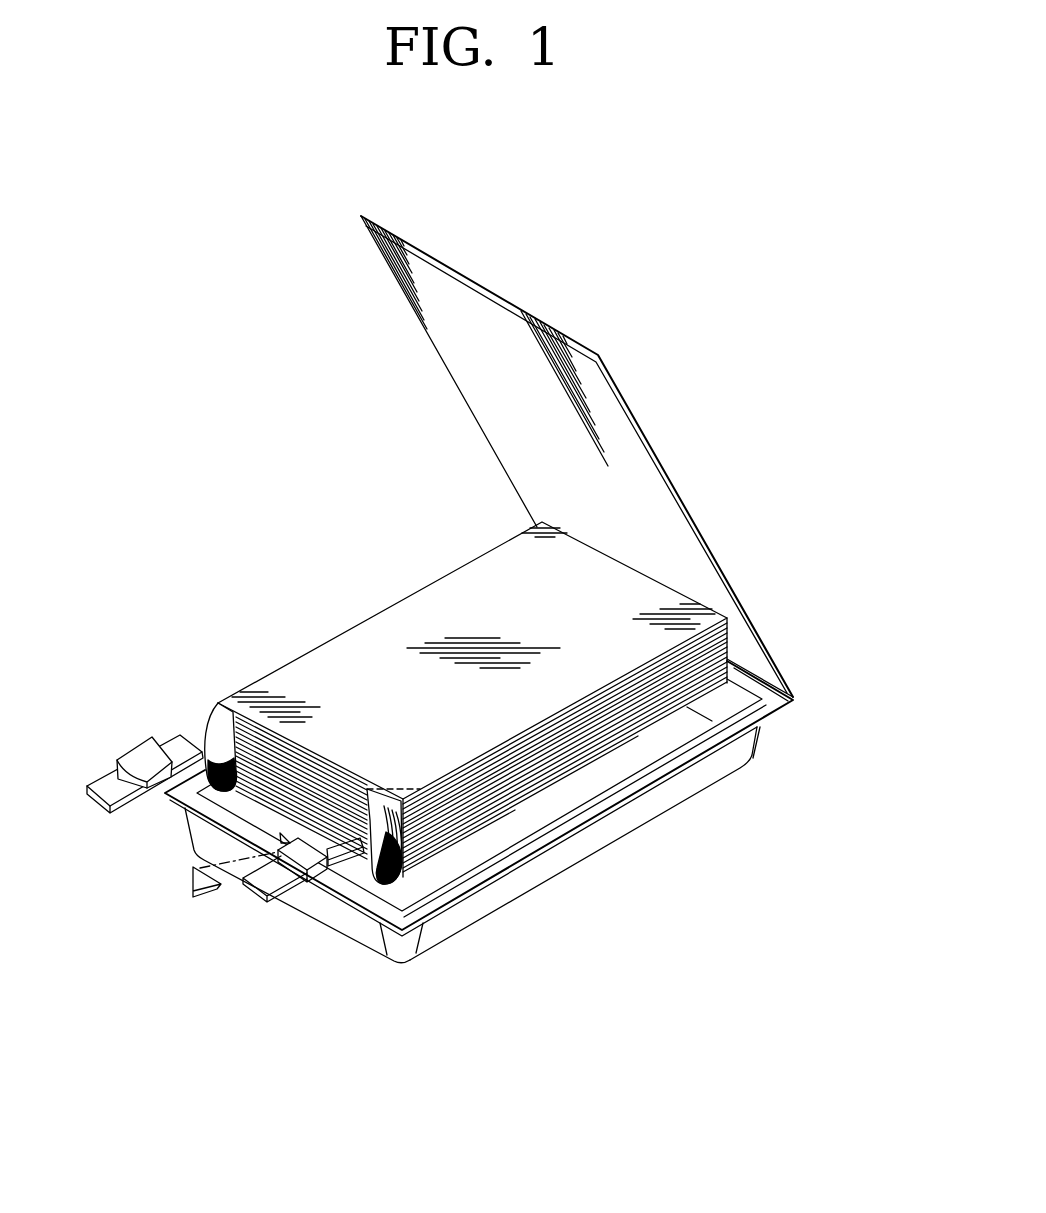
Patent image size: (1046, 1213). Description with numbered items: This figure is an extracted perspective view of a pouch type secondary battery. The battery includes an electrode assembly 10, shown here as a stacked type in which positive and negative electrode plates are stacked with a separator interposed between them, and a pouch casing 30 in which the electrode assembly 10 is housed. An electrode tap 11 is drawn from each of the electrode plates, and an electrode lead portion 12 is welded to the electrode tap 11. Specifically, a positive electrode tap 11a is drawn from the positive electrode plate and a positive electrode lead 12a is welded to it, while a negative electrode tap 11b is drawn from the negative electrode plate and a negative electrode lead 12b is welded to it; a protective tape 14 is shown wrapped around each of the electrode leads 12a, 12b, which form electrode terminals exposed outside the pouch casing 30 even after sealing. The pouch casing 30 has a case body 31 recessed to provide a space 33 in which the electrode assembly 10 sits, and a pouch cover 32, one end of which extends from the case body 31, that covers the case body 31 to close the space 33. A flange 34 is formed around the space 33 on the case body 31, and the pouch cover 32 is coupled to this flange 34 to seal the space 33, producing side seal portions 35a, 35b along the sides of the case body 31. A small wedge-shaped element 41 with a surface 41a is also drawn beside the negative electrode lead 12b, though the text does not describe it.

The electrode assembly 10 is at (452, 598).
The electrode tap 11 is at (312, 713).
The positive electrode tap 11a is at (222, 733).
The negative electrode tap 11b is at (373, 813).
The electrode lead portion 12 is at (207, 855).
The positive electrode lead 12a is at (107, 807).
The negative electrode lead 12b is at (257, 898).
The insulating tape 14 is at (142, 760).
The pouch casing 30 is at (559, 640).
The case body 31 is at (523, 863).
The pouch cover 32 is at (774, 660).
The space 33 is at (542, 808).
The flange 34 is at (505, 842).
The side seal portion 35a is at (353, 914).
The side seal portion 35b is at (627, 802).
The protrusion 41 is at (191, 883).
The protrusion inclined surface 41a is at (207, 870).